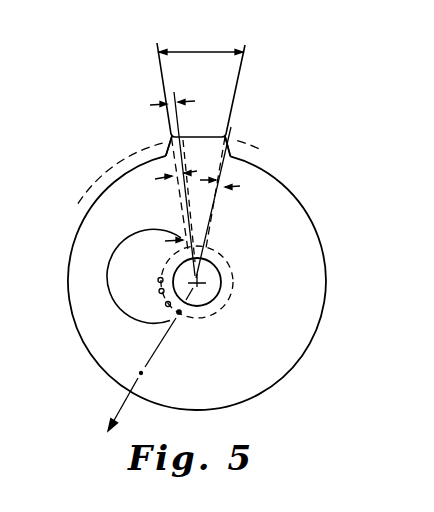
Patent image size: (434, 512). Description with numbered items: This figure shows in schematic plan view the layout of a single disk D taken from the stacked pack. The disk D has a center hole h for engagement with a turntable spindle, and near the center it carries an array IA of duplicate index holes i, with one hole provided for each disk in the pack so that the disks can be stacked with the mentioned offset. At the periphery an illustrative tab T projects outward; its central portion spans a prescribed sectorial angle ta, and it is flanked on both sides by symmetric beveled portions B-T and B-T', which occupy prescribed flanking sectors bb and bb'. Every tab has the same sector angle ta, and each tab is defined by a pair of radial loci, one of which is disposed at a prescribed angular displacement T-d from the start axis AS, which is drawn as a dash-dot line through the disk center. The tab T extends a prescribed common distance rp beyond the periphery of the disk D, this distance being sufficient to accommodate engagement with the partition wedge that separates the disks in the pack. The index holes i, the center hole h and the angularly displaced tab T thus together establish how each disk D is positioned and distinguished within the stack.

The disk D is at (307, 213).
The tab T is at (230, 112).
The sector angle of tab ta is at (201, 38).
The tool blade thickness tb is at (178, 93).
The beveled portion B-T is at (135, 136).
The beveled portion B-T' is at (259, 135).
The tab extension distance rp is at (111, 219).
The flanking sector angle bb is at (160, 187).
The flanking sector angle bb' is at (235, 192).
The center hole h is at (227, 259).
The array of index holes IA is at (197, 307).
The angular displacement T-d is at (158, 281).
The index hole i is at (166, 305).
The start axis AS is at (131, 359).